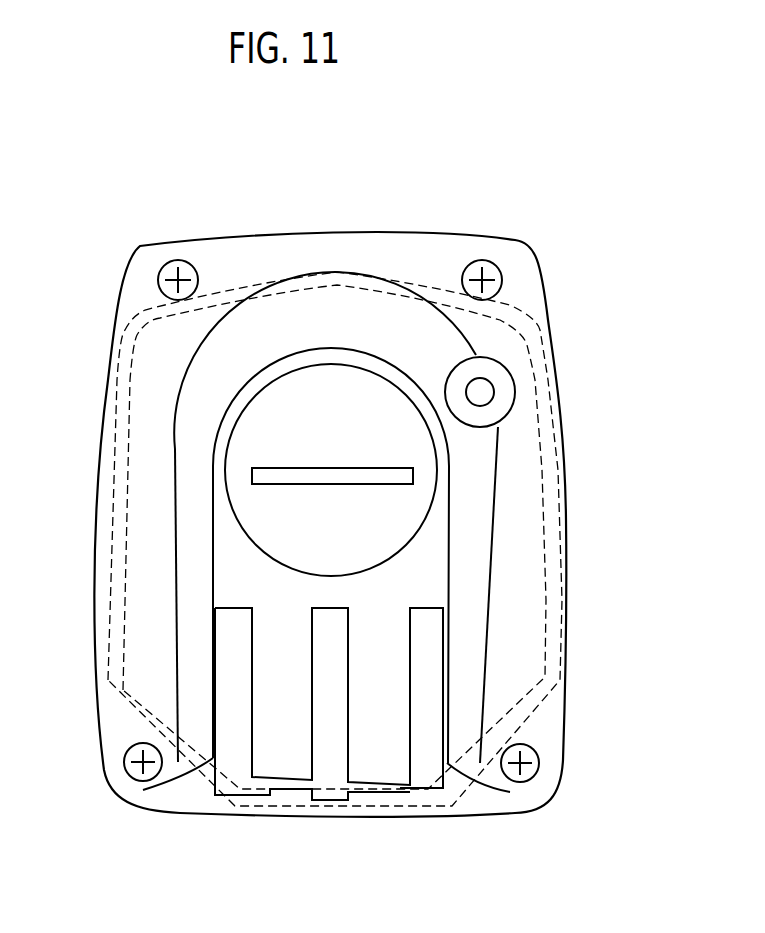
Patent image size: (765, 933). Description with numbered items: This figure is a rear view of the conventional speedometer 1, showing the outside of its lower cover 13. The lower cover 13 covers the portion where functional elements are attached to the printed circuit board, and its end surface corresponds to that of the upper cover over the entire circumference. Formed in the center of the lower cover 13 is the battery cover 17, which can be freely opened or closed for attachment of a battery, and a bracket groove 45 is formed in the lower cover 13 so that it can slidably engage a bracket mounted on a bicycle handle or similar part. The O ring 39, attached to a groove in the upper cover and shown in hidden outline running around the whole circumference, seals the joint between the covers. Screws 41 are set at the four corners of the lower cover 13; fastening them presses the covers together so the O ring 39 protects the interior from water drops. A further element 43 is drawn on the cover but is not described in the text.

The speedometer 1 is at (555, 263).
The lower cover 13 is at (106, 380).
The battery cover 17 is at (365, 398).
The O ring 39 is at (102, 568).
The screws 41 is at (532, 778).
The adjusting screw 43 is at (491, 382).
The bracket groove 45 is at (335, 796).